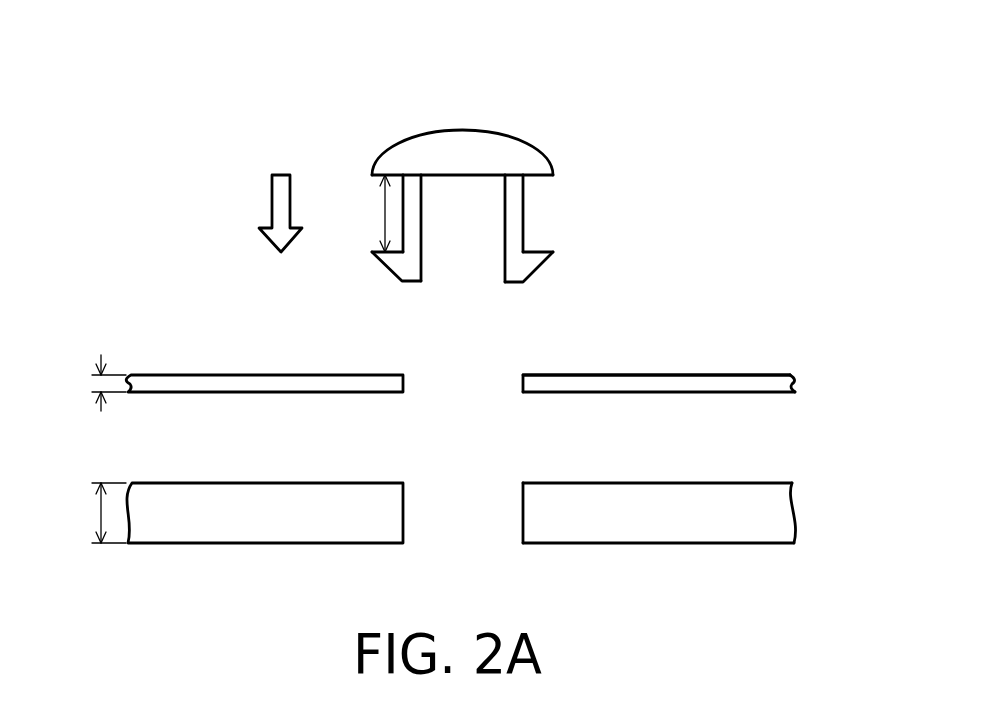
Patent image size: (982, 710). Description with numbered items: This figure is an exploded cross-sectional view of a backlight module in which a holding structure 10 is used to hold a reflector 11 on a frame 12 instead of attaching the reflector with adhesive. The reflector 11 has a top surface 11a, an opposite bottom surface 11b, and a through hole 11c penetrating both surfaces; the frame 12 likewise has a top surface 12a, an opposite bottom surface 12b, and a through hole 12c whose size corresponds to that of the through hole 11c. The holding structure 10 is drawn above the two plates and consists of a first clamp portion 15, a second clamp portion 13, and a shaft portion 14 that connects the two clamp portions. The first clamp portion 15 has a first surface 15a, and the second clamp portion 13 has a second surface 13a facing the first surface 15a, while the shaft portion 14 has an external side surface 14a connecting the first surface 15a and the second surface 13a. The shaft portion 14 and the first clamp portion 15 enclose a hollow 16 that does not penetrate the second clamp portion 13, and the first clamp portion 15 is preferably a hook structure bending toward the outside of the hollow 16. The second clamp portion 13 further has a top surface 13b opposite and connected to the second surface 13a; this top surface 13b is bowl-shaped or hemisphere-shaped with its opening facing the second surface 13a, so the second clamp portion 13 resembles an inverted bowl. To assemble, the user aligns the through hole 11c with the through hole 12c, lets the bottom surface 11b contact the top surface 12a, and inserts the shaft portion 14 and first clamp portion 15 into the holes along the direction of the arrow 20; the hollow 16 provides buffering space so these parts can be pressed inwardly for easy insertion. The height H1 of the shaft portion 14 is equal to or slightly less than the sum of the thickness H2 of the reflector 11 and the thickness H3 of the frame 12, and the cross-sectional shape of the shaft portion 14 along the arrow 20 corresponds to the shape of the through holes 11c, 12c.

The holding structure 10 is at (508, 171).
The reflector 11 is at (499, 376).
The top surface 11a is at (750, 375).
The bottom surface 11b is at (755, 392).
The through hole 11c is at (474, 378).
The frame 12 is at (520, 515).
The top surface 12a is at (765, 483).
The bottom surface 12b is at (745, 543).
The through hole 12c is at (474, 489).
The second clamp portion 13 is at (497, 99).
The second surface 13a is at (540, 176).
The top surface 13b is at (402, 140).
The shaft portion 14 is at (542, 228).
The external side surface 14a is at (523, 193).
The first clamp portion 15 is at (528, 277).
The first surface 15a is at (526, 252).
The hollow 16 is at (460, 240).
The arrow 20 is at (281, 174).
The height of the shaft portion H1 is at (369, 213).
The thickness of the reflector H2 is at (90, 383).
The thickness of the frame H3 is at (90, 513).